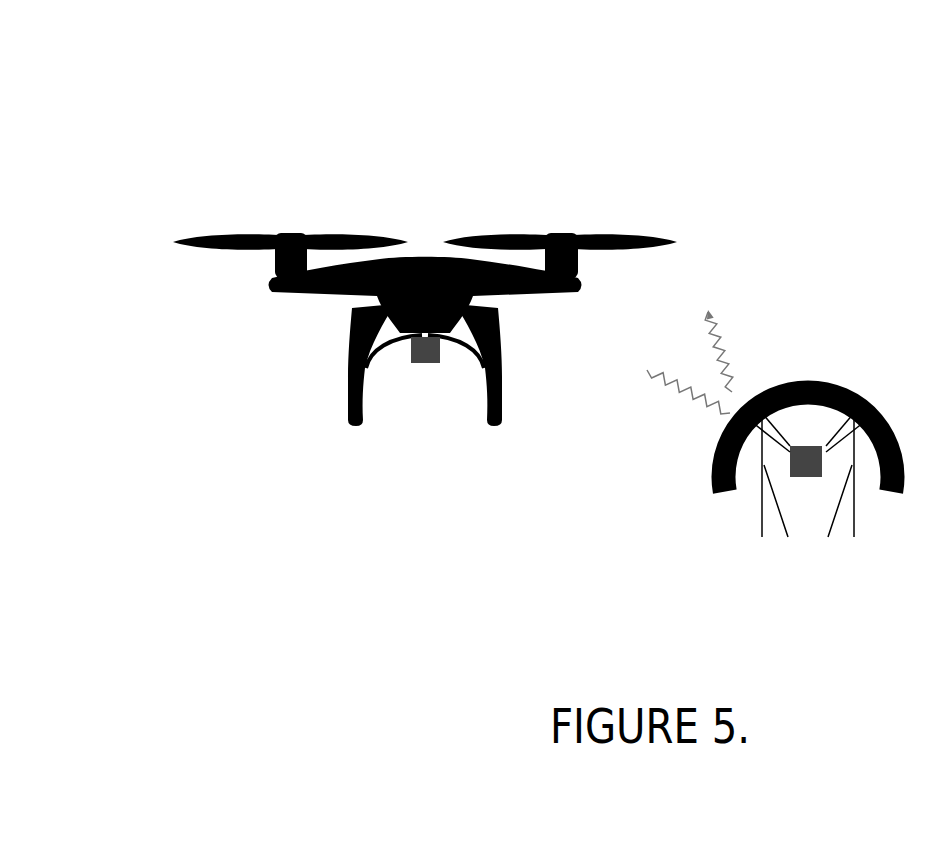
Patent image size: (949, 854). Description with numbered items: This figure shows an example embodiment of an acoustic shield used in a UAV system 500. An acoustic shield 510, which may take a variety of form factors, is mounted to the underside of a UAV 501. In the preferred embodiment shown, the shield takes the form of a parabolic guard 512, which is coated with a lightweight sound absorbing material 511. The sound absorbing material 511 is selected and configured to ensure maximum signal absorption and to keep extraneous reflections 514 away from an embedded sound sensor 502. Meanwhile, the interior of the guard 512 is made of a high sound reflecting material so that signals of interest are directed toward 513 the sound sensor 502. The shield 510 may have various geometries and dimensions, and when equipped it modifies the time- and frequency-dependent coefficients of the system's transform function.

The UAV system 500 is at (273, 113).
The UAV 501 is at (423, 227).
The sound sensor 502 is at (432, 368).
The acoustic shield 510 is at (388, 352).
The sound absorbing material 511 is at (800, 377).
The parabolic guard 512 is at (779, 387).
The direction of signals of interest toward the sound sensor 513 is at (853, 487).
The extraneous reflections 514 is at (680, 360).